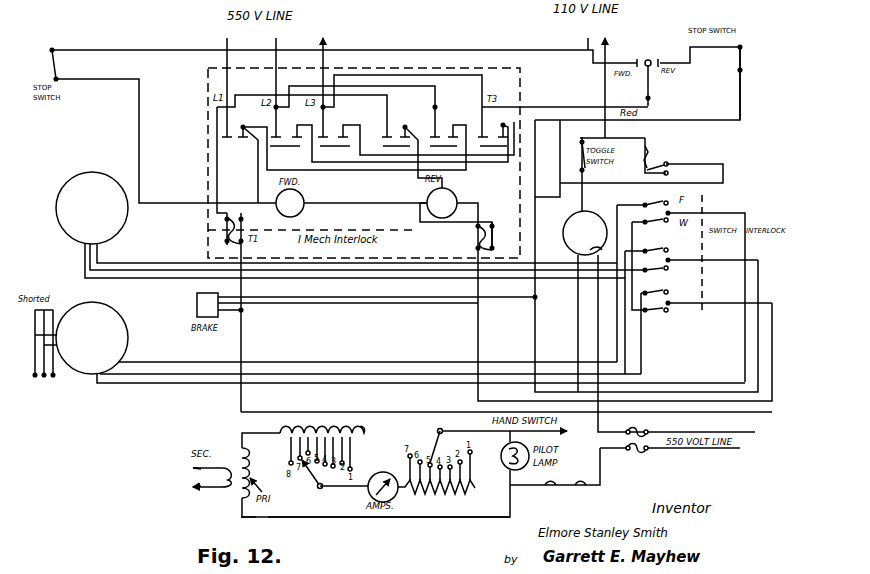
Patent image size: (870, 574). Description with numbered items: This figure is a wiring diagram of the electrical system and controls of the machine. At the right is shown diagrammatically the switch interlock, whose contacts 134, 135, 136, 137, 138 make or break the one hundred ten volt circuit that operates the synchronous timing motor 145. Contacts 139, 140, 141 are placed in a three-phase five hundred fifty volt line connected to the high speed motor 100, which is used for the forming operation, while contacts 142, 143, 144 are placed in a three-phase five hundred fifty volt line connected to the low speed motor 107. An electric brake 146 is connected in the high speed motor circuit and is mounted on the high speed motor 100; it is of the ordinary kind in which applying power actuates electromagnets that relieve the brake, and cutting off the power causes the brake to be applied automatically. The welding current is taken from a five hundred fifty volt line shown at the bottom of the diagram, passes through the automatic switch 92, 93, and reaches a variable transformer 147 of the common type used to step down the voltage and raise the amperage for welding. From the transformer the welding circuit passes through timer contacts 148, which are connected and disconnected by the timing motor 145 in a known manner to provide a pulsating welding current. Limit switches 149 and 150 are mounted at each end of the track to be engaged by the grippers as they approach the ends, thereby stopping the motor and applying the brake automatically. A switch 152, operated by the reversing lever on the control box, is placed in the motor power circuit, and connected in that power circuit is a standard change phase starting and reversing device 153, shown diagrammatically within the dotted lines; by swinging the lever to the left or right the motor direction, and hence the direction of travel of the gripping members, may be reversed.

The limit switch 149 is at (52, 68).
The change phase starting and reversing device 153 is at (387, 63).
The limit switch 150 is at (740, 60).
The switch 152 is at (649, 88).
The contact 134 is at (689, 160).
The contact 138 is at (669, 174).
The low speed motor 107 is at (126, 228).
The high speed motor 100 is at (128, 318).
The electric brake 146 is at (197, 309).
The synchronous timing motor 145 is at (596, 214).
The timer contacts 148 is at (598, 252).
The contact 139 is at (668, 200).
The contact 142 is at (667, 223).
The contact 140 is at (676, 249).
The contact 143 is at (668, 270).
The contact 141 is at (669, 292).
The contact 144 is at (669, 311).
The contact 135 is at (705, 236).
The contact 136 is at (716, 259).
The contact 137 is at (717, 301).
The variable transformer 147 is at (231, 498).
The automatic switch 92 is at (556, 487).
The automatic switch 93 is at (577, 486).